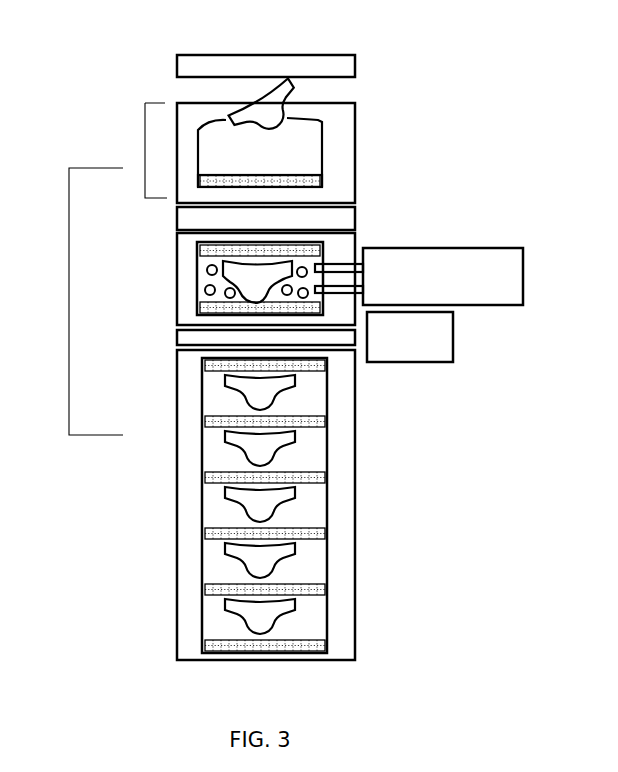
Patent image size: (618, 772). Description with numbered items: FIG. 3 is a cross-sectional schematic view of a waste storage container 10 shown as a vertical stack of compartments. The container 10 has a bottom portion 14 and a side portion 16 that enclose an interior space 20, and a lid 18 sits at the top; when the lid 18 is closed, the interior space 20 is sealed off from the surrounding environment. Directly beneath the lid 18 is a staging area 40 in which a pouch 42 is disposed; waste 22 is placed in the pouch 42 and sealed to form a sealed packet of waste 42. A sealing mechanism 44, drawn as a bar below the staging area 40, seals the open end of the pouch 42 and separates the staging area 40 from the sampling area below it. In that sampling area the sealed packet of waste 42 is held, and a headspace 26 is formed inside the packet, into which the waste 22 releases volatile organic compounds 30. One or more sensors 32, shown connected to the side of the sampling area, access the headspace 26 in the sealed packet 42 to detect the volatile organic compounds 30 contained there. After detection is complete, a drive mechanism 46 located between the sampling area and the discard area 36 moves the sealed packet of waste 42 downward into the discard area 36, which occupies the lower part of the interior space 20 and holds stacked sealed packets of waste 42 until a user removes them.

The waste storage container 10 is at (400, 70).
The bottom portion 14 is at (356, 660).
The side portion 16 is at (358, 425).
The lid 18 is at (177, 68).
The interior space 20 is at (68, 297).
The waste 22 is at (200, 306).
The headspace 26 is at (255, 295).
The volatile organic compounds 30 is at (207, 270).
The sensor 32 is at (497, 248).
The discard area 36 is at (345, 468).
The staging area 40 is at (142, 150).
The pouch 42 is at (313, 152).
The sealing mechanism 44 is at (175, 218).
The drive mechanism 46 is at (453, 345).